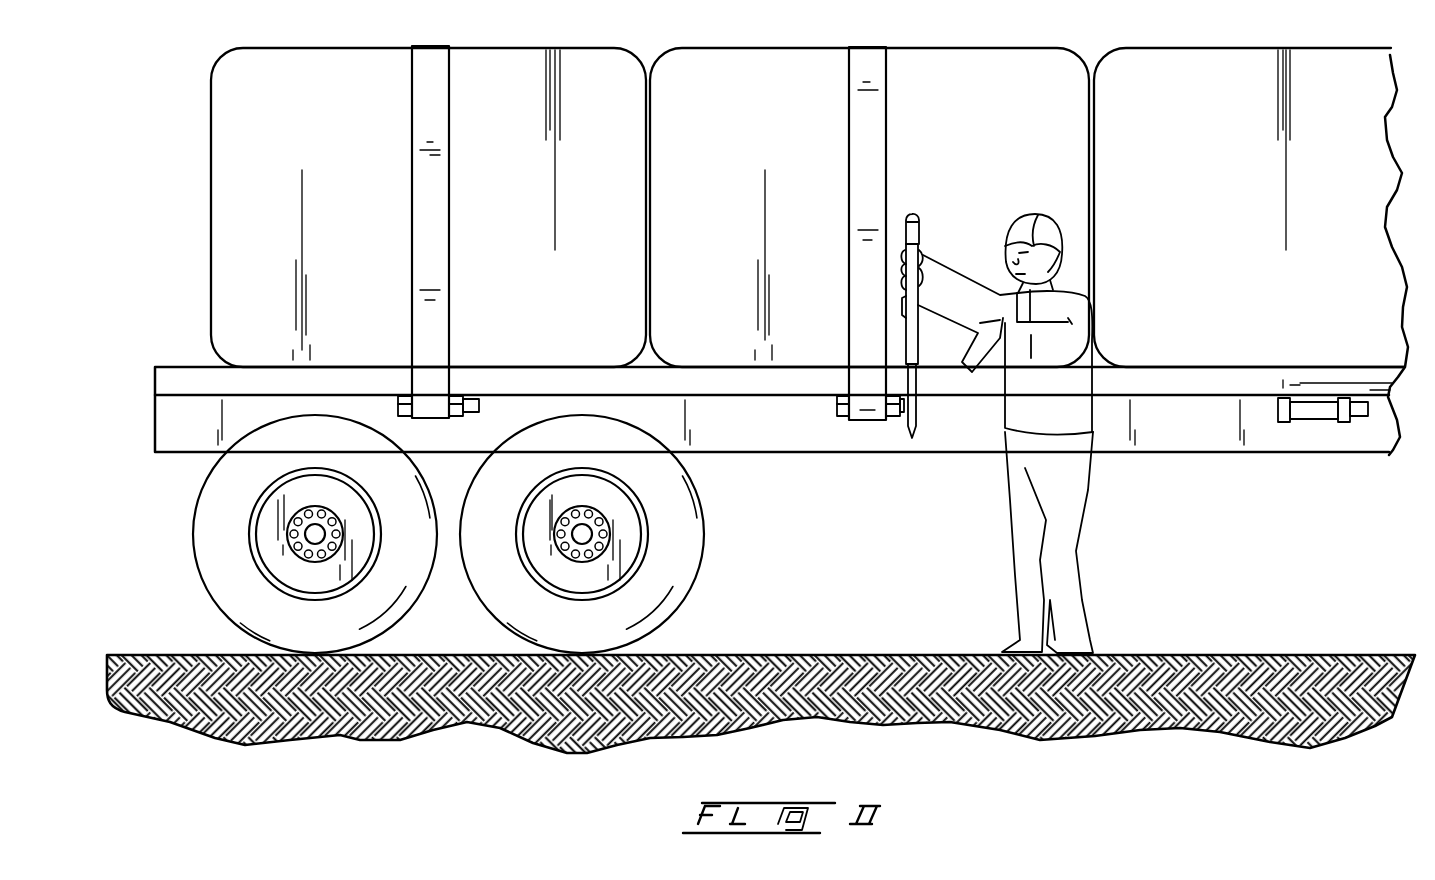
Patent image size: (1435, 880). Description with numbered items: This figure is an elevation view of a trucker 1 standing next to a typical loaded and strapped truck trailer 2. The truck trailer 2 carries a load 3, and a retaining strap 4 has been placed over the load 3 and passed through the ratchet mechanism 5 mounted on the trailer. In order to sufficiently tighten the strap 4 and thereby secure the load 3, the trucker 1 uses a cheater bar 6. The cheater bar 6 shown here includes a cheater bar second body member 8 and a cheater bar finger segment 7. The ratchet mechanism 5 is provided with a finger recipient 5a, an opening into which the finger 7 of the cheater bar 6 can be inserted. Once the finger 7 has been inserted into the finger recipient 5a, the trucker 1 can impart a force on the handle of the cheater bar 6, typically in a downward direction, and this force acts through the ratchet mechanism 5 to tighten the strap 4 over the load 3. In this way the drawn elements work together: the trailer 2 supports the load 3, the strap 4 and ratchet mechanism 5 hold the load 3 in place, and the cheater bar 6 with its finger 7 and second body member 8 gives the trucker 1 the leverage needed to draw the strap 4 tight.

The trucker 1 is at (1097, 515).
The truck trailer 2 is at (1259, 476).
The load 3 is at (734, 108).
The retaining strap 4 is at (868, 140).
The ratchet mechanism 5 is at (877, 421).
The finger recipient 5a is at (1379, 515).
The cheater bar 6 is at (894, 344).
The cheater bar finger segment 7 is at (901, 430).
The cheater bar second body member 8 is at (918, 241).